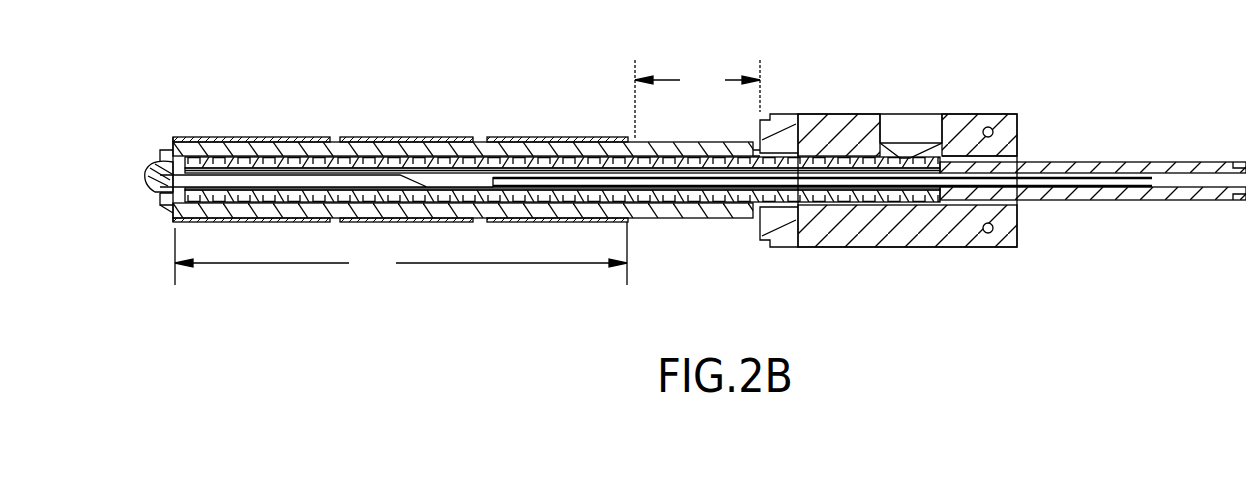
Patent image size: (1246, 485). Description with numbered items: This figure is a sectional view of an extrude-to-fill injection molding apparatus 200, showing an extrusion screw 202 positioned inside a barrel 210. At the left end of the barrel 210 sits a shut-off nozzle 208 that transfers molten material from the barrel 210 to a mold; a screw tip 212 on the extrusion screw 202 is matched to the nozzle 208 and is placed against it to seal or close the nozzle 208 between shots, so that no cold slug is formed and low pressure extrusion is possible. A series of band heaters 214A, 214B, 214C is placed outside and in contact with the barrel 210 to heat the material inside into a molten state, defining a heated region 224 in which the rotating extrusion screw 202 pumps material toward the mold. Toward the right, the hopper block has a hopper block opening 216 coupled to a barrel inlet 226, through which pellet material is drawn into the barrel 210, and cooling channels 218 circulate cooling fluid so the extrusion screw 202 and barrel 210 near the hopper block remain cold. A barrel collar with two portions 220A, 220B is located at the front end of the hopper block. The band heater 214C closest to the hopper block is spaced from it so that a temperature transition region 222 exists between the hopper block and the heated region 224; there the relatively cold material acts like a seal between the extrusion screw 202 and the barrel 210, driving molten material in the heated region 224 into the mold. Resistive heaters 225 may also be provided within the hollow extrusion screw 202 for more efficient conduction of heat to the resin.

The injection molding apparatus 200 is at (208, 70).
The extrusion screw 202 is at (345, 146).
The nozzle 208 is at (162, 157).
The barrel 210 is at (478, 148).
The screw tip 212 is at (153, 194).
The band heater 214A is at (265, 138).
The band heater 214B is at (385, 139).
The band heater 214C is at (528, 139).
The hopper block opening 216 is at (917, 128).
The cooling channel 218 is at (993, 128).
The barrel collar portion 220A is at (782, 128).
The barrel collar portion 220B is at (788, 237).
The temperature transition region 222 is at (697, 100).
The heated region 224 is at (401, 253).
The resistive heater 225 is at (1018, 186).
The barrel inlet 226 is at (926, 160).